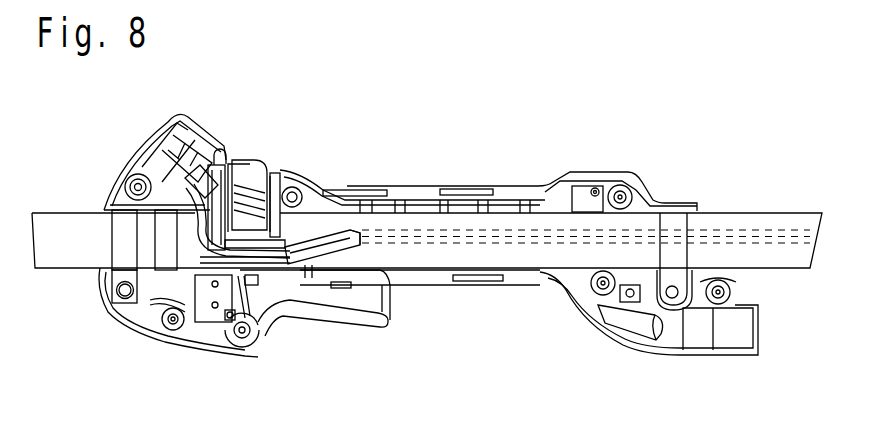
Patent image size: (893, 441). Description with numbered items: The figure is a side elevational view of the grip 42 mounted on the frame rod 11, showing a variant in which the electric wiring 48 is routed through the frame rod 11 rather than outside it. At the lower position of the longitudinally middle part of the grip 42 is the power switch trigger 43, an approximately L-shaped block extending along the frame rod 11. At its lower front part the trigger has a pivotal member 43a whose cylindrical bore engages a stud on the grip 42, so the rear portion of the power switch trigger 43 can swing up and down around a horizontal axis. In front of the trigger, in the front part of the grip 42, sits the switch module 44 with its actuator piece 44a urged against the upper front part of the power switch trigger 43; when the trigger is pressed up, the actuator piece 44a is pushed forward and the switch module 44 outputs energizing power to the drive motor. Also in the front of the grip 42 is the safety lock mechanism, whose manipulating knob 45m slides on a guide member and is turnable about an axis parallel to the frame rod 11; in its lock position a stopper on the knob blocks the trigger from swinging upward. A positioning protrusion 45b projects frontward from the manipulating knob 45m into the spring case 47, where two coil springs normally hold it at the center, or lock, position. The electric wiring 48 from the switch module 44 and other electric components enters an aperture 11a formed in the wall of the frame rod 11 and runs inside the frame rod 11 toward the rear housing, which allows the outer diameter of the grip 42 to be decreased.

The frame rod 11 is at (705, 222).
The aperture 11a is at (348, 233).
The grip 42 is at (410, 190).
The power switch trigger 43 is at (338, 307).
The pivotal member 43a is at (245, 338).
The switch module 44 is at (202, 312).
The actuator piece 44a is at (245, 293).
The positioning protrusion 45b is at (229, 152).
The manipulating knob 45m is at (248, 178).
The spring case 47 is at (223, 148).
The electric wiring 48 is at (337, 236).